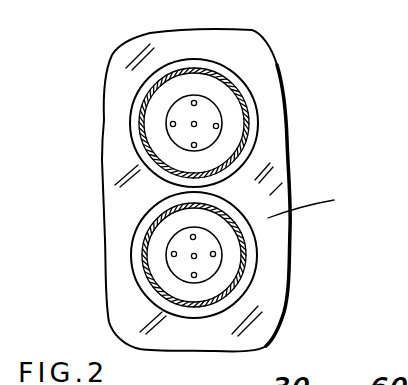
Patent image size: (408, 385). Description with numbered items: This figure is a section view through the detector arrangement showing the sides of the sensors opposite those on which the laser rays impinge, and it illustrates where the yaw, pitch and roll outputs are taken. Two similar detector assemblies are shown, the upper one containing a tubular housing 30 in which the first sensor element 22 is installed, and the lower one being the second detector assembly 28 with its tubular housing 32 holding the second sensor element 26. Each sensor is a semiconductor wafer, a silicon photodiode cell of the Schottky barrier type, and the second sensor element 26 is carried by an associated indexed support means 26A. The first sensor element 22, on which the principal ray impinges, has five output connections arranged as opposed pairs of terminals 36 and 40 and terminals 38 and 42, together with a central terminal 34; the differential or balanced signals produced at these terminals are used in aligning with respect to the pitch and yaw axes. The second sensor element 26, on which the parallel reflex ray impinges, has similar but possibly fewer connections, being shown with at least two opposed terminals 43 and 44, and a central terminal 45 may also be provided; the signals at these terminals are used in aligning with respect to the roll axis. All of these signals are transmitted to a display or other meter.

The first sensor element 22 is at (236, 140).
The second sensor element 26 is at (162, 292).
The indexed support means 26A is at (246, 296).
The second detector assembly 28 is at (268, 218).
The tubular housing 30 is at (157, 70).
The tubular housing 32 is at (146, 226).
The central terminal 34 is at (198, 123).
The terminal 36 is at (197, 101).
The terminal 38 is at (170, 124).
The terminal 40 is at (191, 146).
The terminal 42 is at (217, 128).
The opposed terminal 43 is at (215, 254).
The opposed terminal 44 is at (172, 254).
The central terminal 45 is at (196, 255).